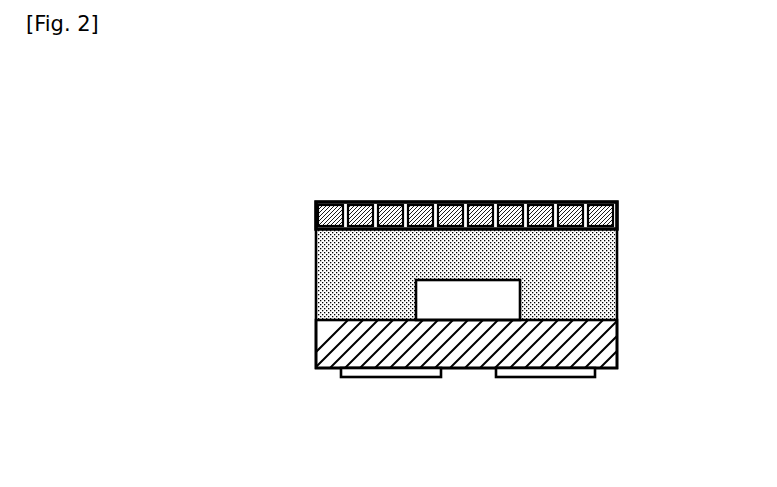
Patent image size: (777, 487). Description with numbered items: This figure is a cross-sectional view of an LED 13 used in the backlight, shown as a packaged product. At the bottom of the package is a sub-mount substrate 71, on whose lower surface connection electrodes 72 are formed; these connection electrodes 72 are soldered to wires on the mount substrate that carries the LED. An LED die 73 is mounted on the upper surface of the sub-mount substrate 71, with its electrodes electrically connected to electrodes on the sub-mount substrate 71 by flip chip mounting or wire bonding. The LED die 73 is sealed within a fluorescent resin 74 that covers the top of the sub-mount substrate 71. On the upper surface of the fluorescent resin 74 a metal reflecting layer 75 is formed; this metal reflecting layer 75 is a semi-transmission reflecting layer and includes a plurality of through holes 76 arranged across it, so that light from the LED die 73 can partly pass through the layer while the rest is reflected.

The LED 13 is at (635, 188).
The sub-mount substrate 71 is at (617, 343).
The connection electrodes 72 is at (408, 377).
The LED die 73 is at (520, 302).
The fluorescent resin 74 is at (617, 248).
The metal reflecting layer 75 is at (316, 211).
The through holes 76 is at (467, 202).